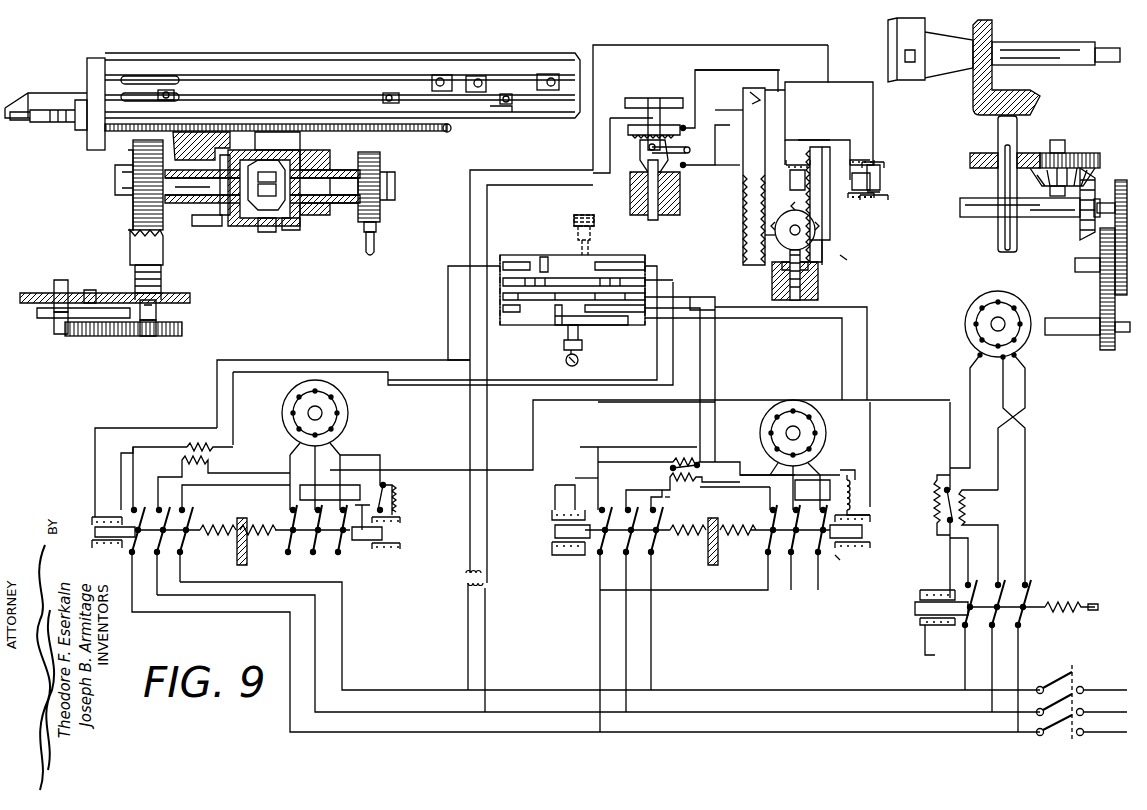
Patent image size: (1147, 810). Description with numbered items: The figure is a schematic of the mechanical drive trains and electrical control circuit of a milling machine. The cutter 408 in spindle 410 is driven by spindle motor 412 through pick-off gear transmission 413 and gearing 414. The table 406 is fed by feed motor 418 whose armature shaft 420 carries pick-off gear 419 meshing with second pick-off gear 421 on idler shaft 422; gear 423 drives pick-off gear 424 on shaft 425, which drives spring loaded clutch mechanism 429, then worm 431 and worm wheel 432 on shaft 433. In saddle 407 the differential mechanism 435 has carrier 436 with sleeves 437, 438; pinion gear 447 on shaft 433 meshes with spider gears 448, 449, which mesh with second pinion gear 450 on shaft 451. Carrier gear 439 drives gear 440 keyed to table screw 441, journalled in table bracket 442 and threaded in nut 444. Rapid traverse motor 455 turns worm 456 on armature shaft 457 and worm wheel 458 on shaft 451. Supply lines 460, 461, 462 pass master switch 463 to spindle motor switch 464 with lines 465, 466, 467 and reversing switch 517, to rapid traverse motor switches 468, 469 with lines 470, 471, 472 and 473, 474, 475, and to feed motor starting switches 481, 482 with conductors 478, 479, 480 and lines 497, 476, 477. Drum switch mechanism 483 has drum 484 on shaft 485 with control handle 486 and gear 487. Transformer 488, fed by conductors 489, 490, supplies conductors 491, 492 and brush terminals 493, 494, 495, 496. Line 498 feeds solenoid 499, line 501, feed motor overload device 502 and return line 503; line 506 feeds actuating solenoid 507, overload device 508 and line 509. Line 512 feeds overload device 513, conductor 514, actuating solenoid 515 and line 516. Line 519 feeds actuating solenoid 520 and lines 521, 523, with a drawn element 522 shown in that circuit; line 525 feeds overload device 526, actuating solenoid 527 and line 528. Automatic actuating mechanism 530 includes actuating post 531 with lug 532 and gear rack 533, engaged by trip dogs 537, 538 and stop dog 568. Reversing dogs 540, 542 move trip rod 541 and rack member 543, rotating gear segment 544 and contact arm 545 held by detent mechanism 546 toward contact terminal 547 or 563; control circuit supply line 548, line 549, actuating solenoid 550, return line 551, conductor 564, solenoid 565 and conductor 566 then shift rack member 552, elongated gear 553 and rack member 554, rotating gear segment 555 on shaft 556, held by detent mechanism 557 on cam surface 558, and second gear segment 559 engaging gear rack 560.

The table 406 is at (392, 46).
The saddle 407 is at (200, 160).
The cutter 408 is at (898, 92).
The spindle 410 is at (945, 70).
The spindle motor 412 is at (965, 326).
The pick-off gear transmission 413 is at (1105, 285).
The gearing 414 is at (1075, 150).
The feed motor 418 is at (290, 422).
The pick-off gear 419 is at (50, 318).
The motor armature shaft 420 is at (55, 284).
The second pick-off gear 421 is at (126, 292).
The idler shaft 422 is at (90, 290).
The gear 423 is at (110, 335).
The pick-off gear 424 is at (180, 336).
The shaft 425 is at (150, 316).
The spring loaded clutch mechanism 429 is at (128, 244).
The worm 431 is at (135, 150).
The worm wheel 432 is at (135, 218).
The shaft 433 is at (178, 205).
The differential mechanism 435 is at (266, 240).
The carrier 436 is at (238, 226).
The sleeve 437 is at (198, 215).
The sleeve 438 is at (350, 215).
The gear 439 is at (287, 228).
The gear 440 is at (285, 145).
The table screw 441 is at (447, 128).
The table bracket 442 is at (88, 62).
The nut 444 is at (180, 112).
The pinion gear 447 is at (222, 205).
The spider gear 448 is at (263, 180).
The spider gear 449 is at (263, 191).
The second pinion gear 450 is at (292, 205).
The shaft 451 is at (330, 178).
The rapid traverse motor 455 is at (768, 424).
The worm 456 is at (378, 222).
The motor armature shaft 457 is at (378, 245).
The worm wheel 458 is at (380, 156).
The supply line 460 is at (290, 636).
The supply line 461 is at (315, 656).
The supply line 462 is at (342, 638).
The master switch 463 is at (1050, 728).
The spindle motor switch 464 is at (1042, 618).
The line 465 is at (962, 555).
The line 466 is at (990, 532).
The line 467 is at (1028, 535).
The rapid traverse motor switch 468 is at (590, 563).
The rapid traverse motor switch 469 is at (838, 560).
The line 470 is at (602, 482).
The line 471 is at (630, 508).
The line 472 is at (668, 500).
The line 473 is at (770, 498).
The line 474 is at (793, 494).
The line 475 is at (848, 465).
The feed motor line 476 is at (345, 490).
The line 477 is at (290, 497).
The conductor 478 is at (135, 468).
The conductor 479 is at (182, 480).
The conductor 480 is at (165, 478).
The feed motor starting switch 481 is at (190, 540).
The feed motor starting switch 482 is at (258, 540).
The drum switch mechanism 483 is at (545, 232).
The drum 484 is at (502, 255).
The shaft 485 is at (566, 334).
The control handle 486 is at (565, 360).
The gear 487 is at (585, 215).
The transformer 488 is at (460, 590).
The conductor 489 is at (462, 655).
The conductor 490 is at (490, 660).
The conductor 491 is at (468, 432).
The conductor 492 is at (489, 430).
The brush terminal 493 is at (498, 266).
The brush terminal 494 is at (505, 315).
The brush terminal 495 is at (498, 283).
The brush terminal 496 is at (498, 296).
The line 497 is at (352, 500).
The line 498 is at (240, 360).
The solenoid 499 is at (100, 515).
The line 501 is at (118, 452).
The feed motor overload device 502 is at (190, 440).
The line 503 is at (233, 445).
The line 506 is at (655, 268).
The actuating solenoid 507 is at (390, 545).
The overload device 508 is at (385, 505).
The line 509 is at (380, 446).
The line 512 is at (413, 470).
The overload device 513 is at (938, 497).
The conductor 514 is at (948, 553).
The actuating solenoid 515 is at (930, 595).
The line 516 is at (910, 640).
The reversing switch 517 is at (1025, 425).
The line 519 is at (690, 298).
The actuating solenoid 520 is at (550, 535).
The line 521 is at (578, 478).
The resistor 522 is at (678, 448).
The line 523 is at (716, 404).
The line 525 is at (740, 320).
The overload device 526 is at (860, 480).
The actuating solenoid 527 is at (862, 530).
The line 528 is at (868, 404).
The automatic actuating mechanism 530 is at (843, 252).
The actuating post 531 is at (745, 118).
The diamond shaped lug 532 is at (772, 93).
The gear rack 533 is at (742, 195).
The trip dog 537 is at (440, 75).
The trip dog 538 is at (482, 76).
The reversing dog 540 is at (165, 90).
The trip rod 541 is at (645, 98).
The reversing dog 542 is at (515, 106).
The rack member 543 is at (640, 136).
The gear segment 544 is at (645, 150).
The switch contact arm 545 is at (680, 143).
The detent mechanism 546 is at (646, 176).
The contact terminal 547 is at (684, 170).
The control circuit supply line 548 is at (610, 118).
The line 549 is at (748, 116).
The actuating solenoid 550 is at (876, 184).
The return line 551 is at (845, 125).
The rack member 552 is at (830, 198).
The elongated gear 553 is at (820, 158).
The rack member 554 is at (824, 228).
The gear segment 555 is at (822, 253).
The shaft 556 is at (792, 222).
The detent mechanism 557 is at (800, 275).
The detent cam surface 558 is at (778, 248).
The second gear segment 559 is at (770, 228).
The gear rack 560 is at (745, 172).
The contact terminal 563 is at (721, 100).
The conductor 564 is at (715, 70).
The solenoid 565 is at (802, 150).
The conductor 566 is at (798, 145).
The stop dog 568 is at (545, 74).